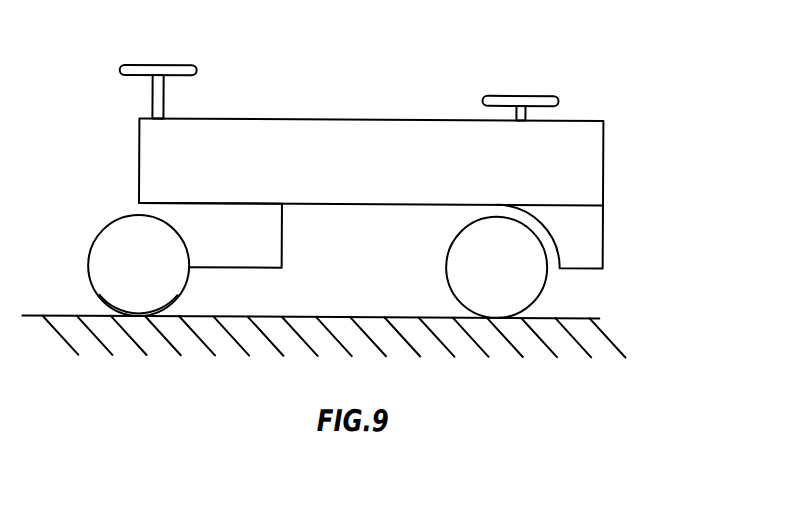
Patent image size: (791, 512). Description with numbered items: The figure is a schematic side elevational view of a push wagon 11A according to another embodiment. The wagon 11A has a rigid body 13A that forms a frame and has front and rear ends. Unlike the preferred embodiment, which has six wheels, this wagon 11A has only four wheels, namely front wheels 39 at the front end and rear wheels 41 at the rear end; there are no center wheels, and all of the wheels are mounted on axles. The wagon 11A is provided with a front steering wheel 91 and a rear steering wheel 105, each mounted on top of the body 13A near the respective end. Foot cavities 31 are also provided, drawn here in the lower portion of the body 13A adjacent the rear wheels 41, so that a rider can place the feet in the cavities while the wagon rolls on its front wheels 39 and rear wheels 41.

The wagon 11A is at (414, 164).
The body 13A is at (305, 132).
The rear steering wheel 105 is at (172, 65).
The front steering wheel 91 is at (520, 94).
The foot cavities 31 is at (139, 215).
The rear wheels 41 is at (135, 305).
The front wheels 39 is at (490, 295).